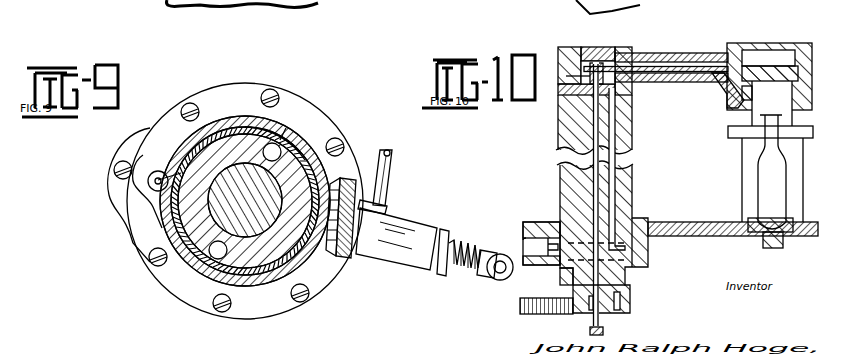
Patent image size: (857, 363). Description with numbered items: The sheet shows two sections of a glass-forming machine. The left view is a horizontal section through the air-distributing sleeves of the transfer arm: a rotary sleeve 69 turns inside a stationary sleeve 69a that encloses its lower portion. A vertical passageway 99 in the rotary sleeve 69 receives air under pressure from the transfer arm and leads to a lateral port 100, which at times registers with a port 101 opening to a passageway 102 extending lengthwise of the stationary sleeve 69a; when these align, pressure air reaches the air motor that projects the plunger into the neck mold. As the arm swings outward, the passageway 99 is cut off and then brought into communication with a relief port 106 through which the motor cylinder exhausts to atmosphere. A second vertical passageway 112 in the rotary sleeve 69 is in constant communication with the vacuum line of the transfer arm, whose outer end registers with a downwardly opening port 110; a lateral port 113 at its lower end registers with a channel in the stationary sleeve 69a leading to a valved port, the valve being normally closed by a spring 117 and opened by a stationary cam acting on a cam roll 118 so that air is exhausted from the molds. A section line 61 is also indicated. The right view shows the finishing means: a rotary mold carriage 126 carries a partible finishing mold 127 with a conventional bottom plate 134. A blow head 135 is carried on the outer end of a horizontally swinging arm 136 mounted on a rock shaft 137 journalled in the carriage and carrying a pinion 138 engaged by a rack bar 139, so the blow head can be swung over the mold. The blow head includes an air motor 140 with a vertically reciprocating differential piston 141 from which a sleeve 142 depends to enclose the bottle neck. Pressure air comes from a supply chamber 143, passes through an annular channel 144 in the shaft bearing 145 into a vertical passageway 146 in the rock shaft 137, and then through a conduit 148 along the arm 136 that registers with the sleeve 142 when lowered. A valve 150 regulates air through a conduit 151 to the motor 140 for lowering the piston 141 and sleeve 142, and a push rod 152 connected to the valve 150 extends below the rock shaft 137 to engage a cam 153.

In FIG. 9, the shaft bore 61 is at (254, 232).
In FIG. 9, the rotary sleeve 69 is at (233, 137).
In FIG. 9, the stationary sleeve 69a is at (290, 135).
In FIG. 9, the vertical passageway 99 is at (214, 254).
In FIG. 9, the lateral port 100 is at (221, 262).
In FIG. 9, the port 101 is at (160, 141).
In FIG. 9, the passageway 102 is at (150, 183).
In FIG. 9, the relief port 106 is at (173, 238).
In FIG. 9, the downwardly opening port 110 is at (390, 170).
In FIG. 9, the vertical passageway 112 is at (270, 142).
In FIG. 9, the lateral port 113 is at (286, 128).
In FIG. 9, the spring 117 is at (452, 254).
In FIG. 9, the cam roll 118 is at (513, 259).
In FIG. 10, the rotary mold carriage 126 is at (738, 236).
In FIG. 10, the finishing mold 127 is at (745, 193).
In FIG. 10, the bottom plate 134 is at (768, 248).
In FIG. 10, the blow head 135 is at (783, 43).
In FIG. 10, the horizontally swinging arm 136 is at (712, 55).
In FIG. 10, the rock shaft 137 is at (627, 133).
In FIG. 10, the pinion 138 is at (630, 304).
In FIG. 10, the rack bar 139 is at (546, 299).
In FIG. 10, the air motor 140 is at (765, 64).
In FIG. 10, the differential piston 141 is at (748, 78).
In FIG. 10, the sleeve 142 is at (750, 116).
In FIG. 10, the supply chamber 143 is at (540, 247).
In FIG. 10, the annular channel 144 is at (560, 270).
In FIG. 10, the shaft bearing 145 is at (640, 268).
In FIG. 10, the vertical passageway 146 is at (610, 194).
In FIG. 10, the conduit 148 is at (670, 73).
In FIG. 10, the valve 150 is at (591, 60).
In FIG. 10, the conduit 151 is at (645, 56).
In FIG. 10, the push rod 152 is at (593, 138).
In FIG. 10, the cam 153 is at (589, 331).